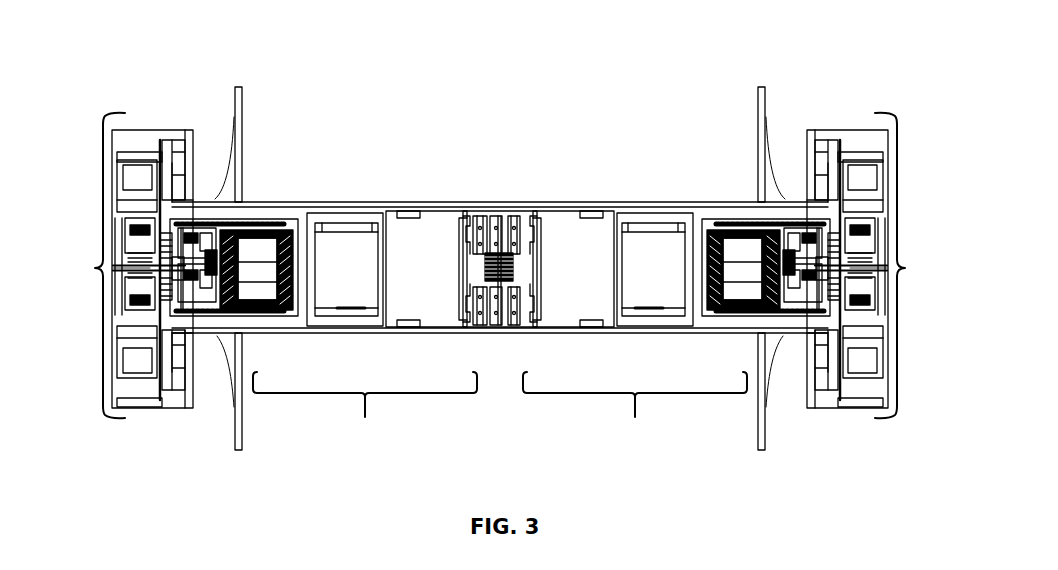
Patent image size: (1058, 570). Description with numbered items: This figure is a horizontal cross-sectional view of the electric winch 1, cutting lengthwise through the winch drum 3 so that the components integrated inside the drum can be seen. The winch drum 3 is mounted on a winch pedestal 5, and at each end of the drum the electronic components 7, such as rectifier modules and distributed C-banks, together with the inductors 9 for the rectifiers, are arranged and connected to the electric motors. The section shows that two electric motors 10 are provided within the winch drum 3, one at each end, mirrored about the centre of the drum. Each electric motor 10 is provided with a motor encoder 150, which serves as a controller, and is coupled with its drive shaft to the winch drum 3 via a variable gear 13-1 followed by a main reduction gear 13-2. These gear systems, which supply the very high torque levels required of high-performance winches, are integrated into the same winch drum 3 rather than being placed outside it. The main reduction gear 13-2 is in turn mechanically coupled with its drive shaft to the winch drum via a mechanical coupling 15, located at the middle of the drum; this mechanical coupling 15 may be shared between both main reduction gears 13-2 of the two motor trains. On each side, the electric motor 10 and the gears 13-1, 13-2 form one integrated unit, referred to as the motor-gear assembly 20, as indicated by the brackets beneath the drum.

The electric winch 1 is at (810, 72).
The winch drum 3 is at (362, 202).
The winch pedestal 5 is at (176, 402).
The electronic components 7 is at (497, 265).
The inductors 9 is at (498, 281).
The electric motor 10 is at (259, 296).
The variable gear 13-1 is at (343, 263).
The main reduction gear 13-2 is at (440, 268).
The mechanical coupling 15 is at (515, 260).
The motor-gear assembly 20 is at (500, 408).
The motor encoder 150 is at (253, 267).